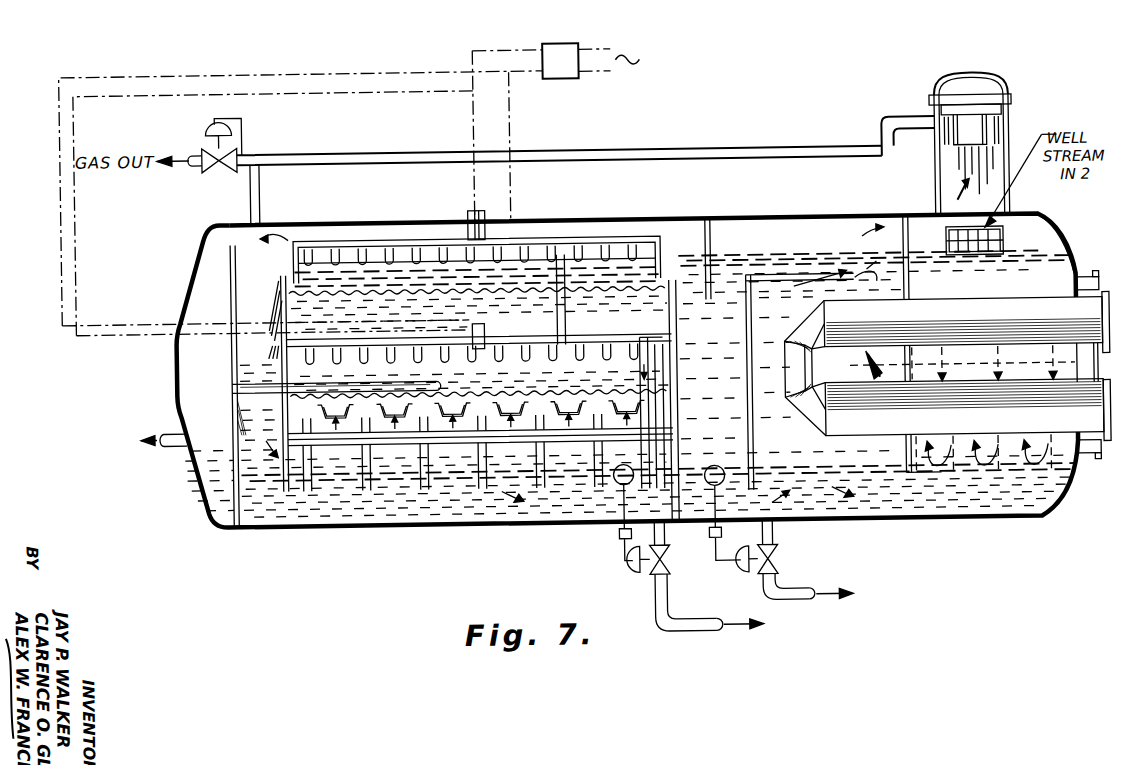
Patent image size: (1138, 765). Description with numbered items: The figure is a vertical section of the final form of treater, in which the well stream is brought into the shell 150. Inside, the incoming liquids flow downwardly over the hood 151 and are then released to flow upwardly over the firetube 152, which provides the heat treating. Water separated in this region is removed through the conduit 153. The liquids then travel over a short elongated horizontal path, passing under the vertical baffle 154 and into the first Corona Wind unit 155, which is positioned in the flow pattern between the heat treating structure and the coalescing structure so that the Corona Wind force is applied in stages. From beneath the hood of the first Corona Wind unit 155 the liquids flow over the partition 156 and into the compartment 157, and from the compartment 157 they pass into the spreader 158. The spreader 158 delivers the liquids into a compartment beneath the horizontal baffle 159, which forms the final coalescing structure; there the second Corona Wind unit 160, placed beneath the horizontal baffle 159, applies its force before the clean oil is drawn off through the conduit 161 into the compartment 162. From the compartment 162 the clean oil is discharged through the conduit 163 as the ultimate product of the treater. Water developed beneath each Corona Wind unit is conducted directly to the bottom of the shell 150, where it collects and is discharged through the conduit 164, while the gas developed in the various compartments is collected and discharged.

The shell 150 is at (1063, 253).
The hood 151 is at (1077, 278).
The firetube 152 is at (948, 381).
The conduit 153 is at (789, 599).
The vertical baffle 154 is at (716, 244).
The first Corona Wind unit 155 is at (448, 247).
The partition 156 is at (278, 295).
The compartment 157 is at (260, 358).
The spreader 158 is at (322, 444).
The horizontal baffle 159 is at (586, 335).
The second Corona Wind unit 160 is at (502, 345).
The conduit 161 is at (298, 377).
The compartment 162 is at (213, 386).
The conduit 163 is at (174, 443).
The conduit 164 is at (683, 625).